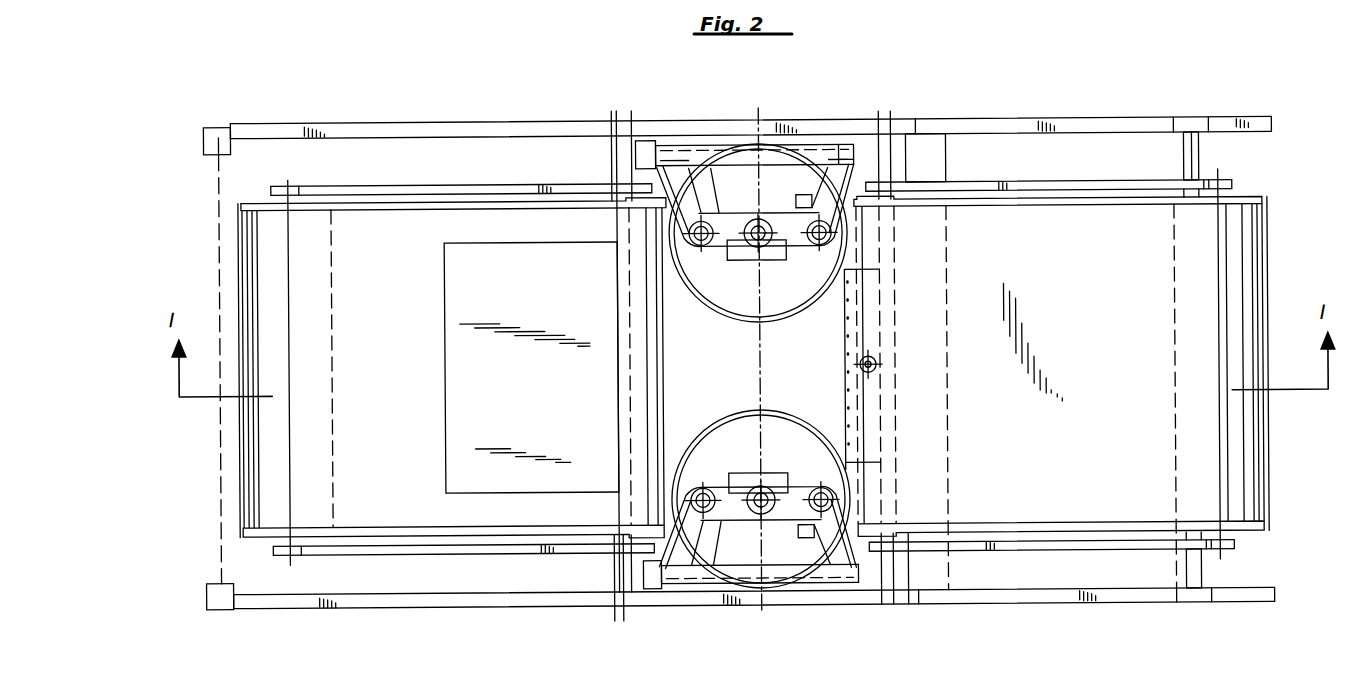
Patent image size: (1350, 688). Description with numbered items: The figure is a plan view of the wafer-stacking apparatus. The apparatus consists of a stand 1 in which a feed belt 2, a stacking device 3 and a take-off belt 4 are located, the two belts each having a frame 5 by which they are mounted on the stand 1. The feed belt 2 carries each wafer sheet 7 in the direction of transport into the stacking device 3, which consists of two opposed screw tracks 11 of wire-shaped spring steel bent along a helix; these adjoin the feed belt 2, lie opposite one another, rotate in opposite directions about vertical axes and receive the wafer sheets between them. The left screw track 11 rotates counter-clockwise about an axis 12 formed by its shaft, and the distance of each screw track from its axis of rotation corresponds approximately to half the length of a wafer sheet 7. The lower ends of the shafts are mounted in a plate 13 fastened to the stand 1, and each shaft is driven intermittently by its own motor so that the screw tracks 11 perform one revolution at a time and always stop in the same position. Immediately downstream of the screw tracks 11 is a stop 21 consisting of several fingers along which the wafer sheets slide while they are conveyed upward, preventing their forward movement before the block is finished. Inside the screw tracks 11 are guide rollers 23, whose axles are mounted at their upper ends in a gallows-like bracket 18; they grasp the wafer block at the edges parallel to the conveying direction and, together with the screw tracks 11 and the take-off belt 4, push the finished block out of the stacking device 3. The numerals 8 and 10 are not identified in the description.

The stand 1 is at (386, 129).
The feed belt 2 is at (356, 268).
The stacking device 3 is at (745, 403).
The take-off belt 4 is at (988, 289).
The frame 5 is at (514, 184).
The wafer sheet 7 is at (539, 308).
The cross bracket 8 is at (619, 158).
The end block 10 is at (216, 598).
The screw track 11 is at (802, 160).
The axis of rotation 12 is at (769, 489).
The plate 13 is at (706, 147).
The gallows-like bracket 18 is at (858, 158).
The stop 21 is at (871, 353).
The guide roller 23 is at (721, 214).